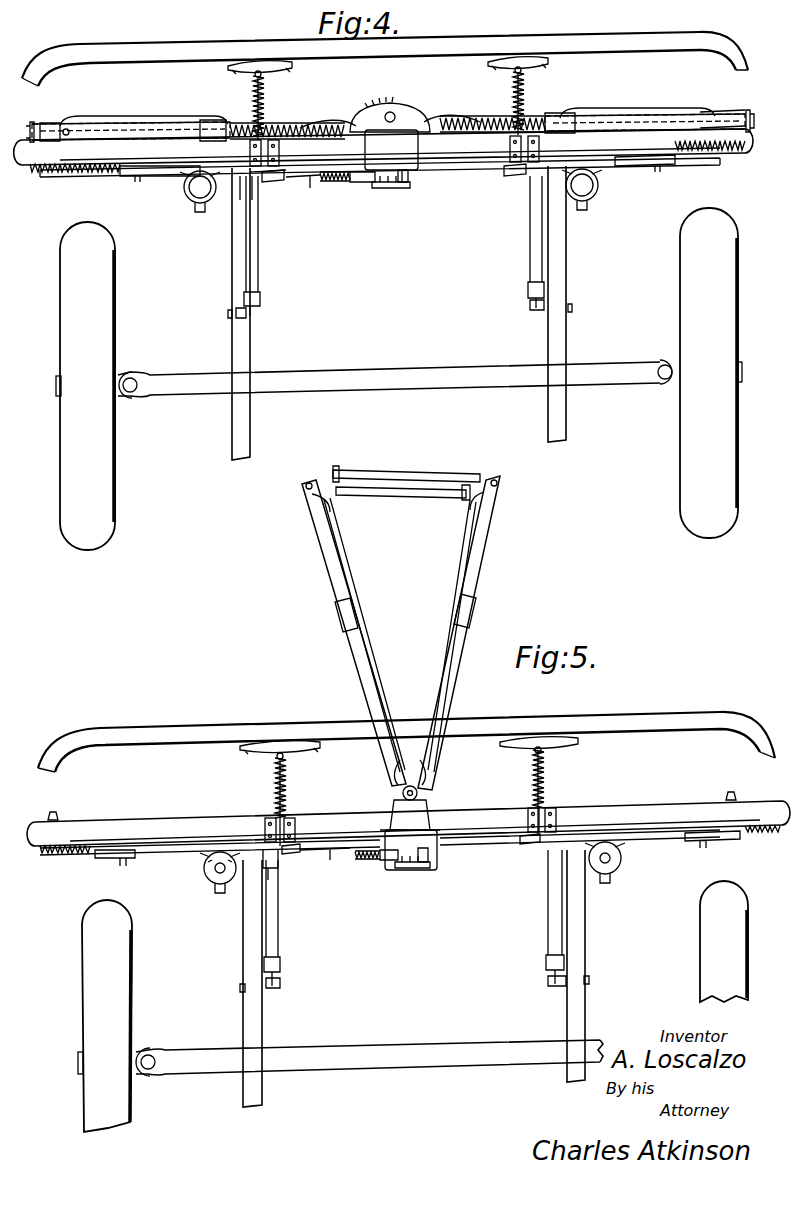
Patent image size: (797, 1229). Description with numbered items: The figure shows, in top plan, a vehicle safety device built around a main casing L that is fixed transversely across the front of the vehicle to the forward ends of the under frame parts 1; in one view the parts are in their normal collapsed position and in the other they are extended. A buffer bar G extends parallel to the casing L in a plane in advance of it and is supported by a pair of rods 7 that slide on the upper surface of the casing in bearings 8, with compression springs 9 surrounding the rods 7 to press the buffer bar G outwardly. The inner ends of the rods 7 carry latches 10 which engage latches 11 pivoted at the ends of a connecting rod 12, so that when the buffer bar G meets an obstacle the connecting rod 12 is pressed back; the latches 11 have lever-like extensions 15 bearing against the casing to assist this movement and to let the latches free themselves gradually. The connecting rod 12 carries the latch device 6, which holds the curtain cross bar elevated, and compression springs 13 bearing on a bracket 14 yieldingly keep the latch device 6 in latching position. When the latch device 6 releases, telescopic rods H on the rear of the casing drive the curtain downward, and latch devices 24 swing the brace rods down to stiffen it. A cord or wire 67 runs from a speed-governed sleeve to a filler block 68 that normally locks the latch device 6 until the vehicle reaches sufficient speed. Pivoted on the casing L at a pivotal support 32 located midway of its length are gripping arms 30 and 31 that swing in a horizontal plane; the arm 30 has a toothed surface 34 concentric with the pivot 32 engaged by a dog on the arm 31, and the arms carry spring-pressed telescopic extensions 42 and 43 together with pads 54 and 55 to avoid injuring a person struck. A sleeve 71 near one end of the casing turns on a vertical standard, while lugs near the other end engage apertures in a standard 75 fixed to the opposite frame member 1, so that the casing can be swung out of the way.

In FIG. 4, the buffer bar G is at (578, 12).
In FIG. 5, the buffer bar G is at (620, 722).
In FIG. 4, the main casing L is at (735, 132).
In FIG. 5, the main casing L is at (638, 818).
In FIG. 4, the telescopic rods H is at (190, 200).
In FIG. 5, the telescopic rods H is at (208, 876).
In FIG. 4, the under frame parts 1 is at (252, 350).
In FIG. 5, the under frame parts 1 is at (248, 930).
In FIG. 4, the latch device 6 is at (400, 168).
In FIG. 5, the latch device 6 is at (418, 850).
In FIG. 4, the rods 7 is at (266, 98).
In FIG. 4, the bearings 8 is at (280, 151).
In FIG. 4, the compression springs 9 is at (250, 98).
In FIG. 5, the latches 10 is at (262, 846).
In FIG. 4, the latches 11 is at (284, 182).
In FIG. 5, the latches 11 is at (296, 856).
In FIG. 4, the connecting rod 12 is at (444, 170).
In FIG. 5, the connecting rod 12 is at (346, 845).
In FIG. 4, the compression springs 13 is at (410, 180).
In FIG. 5, the compression springs 13 is at (428, 858).
In FIG. 4, the bracket 14 is at (390, 188).
In FIG. 5, the bracket 14 is at (412, 868).
In FIG. 5, the lever-like extensions 15 is at (296, 840).
In FIG. 4, the latch devices 24 is at (138, 180).
In FIG. 5, the latch devices 24 is at (126, 864).
In FIG. 4, the gripping arm 30 is at (150, 128).
In FIG. 5, the gripping arm 30 is at (335, 580).
In FIG. 4, the gripping arm 31 is at (612, 118).
In FIG. 5, the gripping arm 31 is at (480, 574).
In FIG. 4, the pivotal support 32 is at (398, 108).
In FIG. 5, the pivotal support 32 is at (420, 790).
In FIG. 4, the toothed surface 34 is at (380, 103).
In FIG. 4, the extension 42 is at (40, 128).
In FIG. 5, the extension 42 is at (390, 497).
In FIG. 4, the extension 43 is at (750, 114).
In FIG. 5, the extension 43 is at (424, 474).
In FIG. 4, the pads 54 is at (122, 120).
In FIG. 5, the pads 54 is at (430, 638).
In FIG. 4, the pads 55 is at (28, 128).
In FIG. 5, the pads 55 is at (336, 466).
In FIG. 4, the cord or wire 67 is at (312, 188).
In FIG. 5, the cord or wire 67 is at (330, 860).
In FIG. 4, the filler block 68 is at (370, 185).
In FIG. 5, the filler block 68 is at (388, 862).
In FIG. 4, the sleeve 71 is at (240, 196).
In FIG. 5, the sleeve 71 is at (278, 866).
In FIG. 4, the standard 75 is at (556, 210).
In FIG. 5, the standard 75 is at (548, 870).